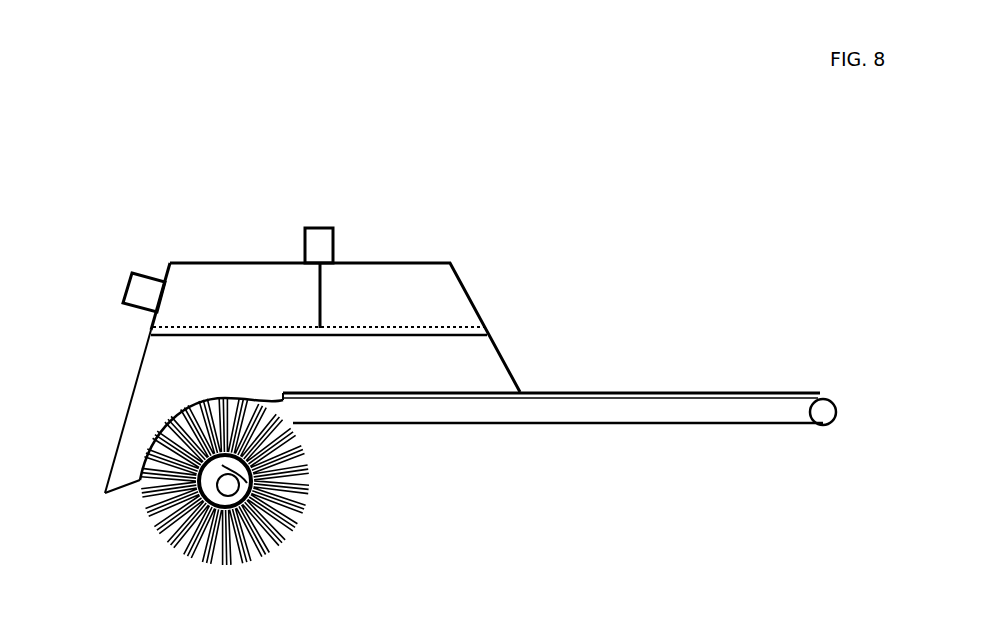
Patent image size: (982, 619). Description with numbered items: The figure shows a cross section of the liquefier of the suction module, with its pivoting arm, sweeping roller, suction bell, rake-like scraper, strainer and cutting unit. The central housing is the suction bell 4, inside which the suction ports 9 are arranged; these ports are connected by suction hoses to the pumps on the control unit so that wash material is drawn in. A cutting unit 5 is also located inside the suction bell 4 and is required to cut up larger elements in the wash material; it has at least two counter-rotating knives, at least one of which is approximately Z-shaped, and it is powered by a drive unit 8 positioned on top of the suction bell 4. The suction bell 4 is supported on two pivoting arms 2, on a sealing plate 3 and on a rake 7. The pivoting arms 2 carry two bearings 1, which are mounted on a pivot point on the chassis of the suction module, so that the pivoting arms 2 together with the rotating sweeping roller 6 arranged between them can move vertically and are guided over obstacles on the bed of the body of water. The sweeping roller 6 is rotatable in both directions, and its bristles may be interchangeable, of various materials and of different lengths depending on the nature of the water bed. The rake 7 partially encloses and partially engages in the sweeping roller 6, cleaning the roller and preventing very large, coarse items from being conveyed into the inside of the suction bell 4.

The bearings 1 is at (823, 410).
The pivoting arms 2 is at (710, 407).
The sealing plate 3 is at (618, 393).
The suction bell 4 is at (417, 263).
The cutting unit 5 is at (463, 327).
The sweeping roller 6 is at (312, 493).
The rake 7 is at (123, 488).
The drive unit 8 is at (320, 228).
The suction ports 9 is at (132, 273).